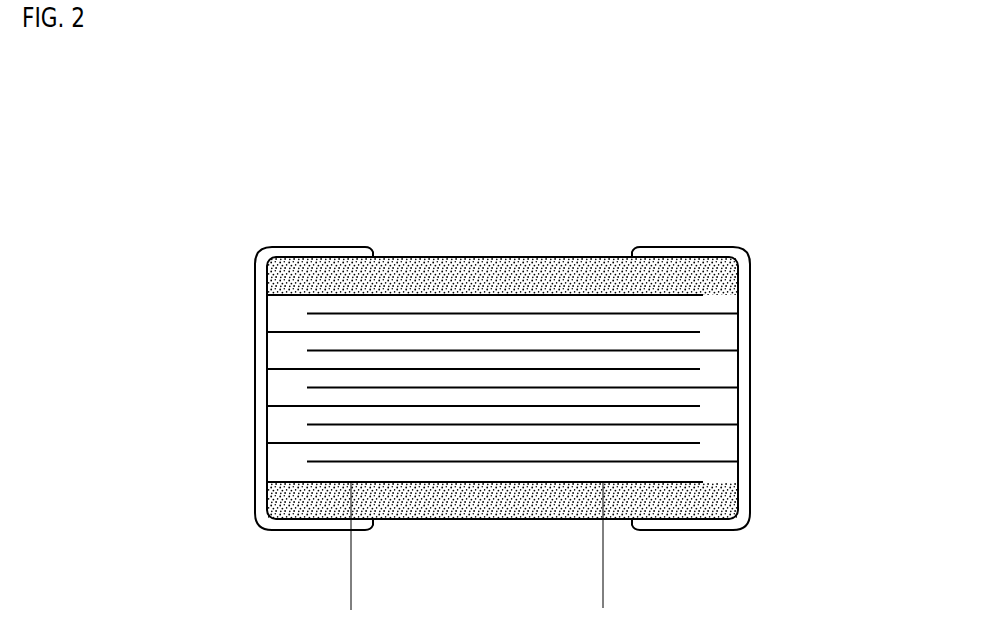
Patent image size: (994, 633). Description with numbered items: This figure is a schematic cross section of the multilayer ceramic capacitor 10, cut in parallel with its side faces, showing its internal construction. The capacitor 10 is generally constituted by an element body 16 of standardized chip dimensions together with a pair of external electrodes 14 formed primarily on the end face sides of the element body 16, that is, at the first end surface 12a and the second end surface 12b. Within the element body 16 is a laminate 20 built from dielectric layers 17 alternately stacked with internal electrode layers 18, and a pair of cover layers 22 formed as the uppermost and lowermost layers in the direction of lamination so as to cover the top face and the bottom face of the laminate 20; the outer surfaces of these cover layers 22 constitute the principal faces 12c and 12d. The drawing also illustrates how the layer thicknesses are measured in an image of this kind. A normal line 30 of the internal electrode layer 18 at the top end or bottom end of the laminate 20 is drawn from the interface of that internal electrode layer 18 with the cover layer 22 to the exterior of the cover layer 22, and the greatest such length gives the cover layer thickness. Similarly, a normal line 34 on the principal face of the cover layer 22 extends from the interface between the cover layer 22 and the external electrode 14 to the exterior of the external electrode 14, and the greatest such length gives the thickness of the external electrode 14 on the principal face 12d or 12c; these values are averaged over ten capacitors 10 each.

The multilayer ceramic capacitor 10 is at (667, 201).
The first end surface of ceramic body 12a is at (263, 393).
The second end surface of ceramic body 12b is at (752, 331).
The principal face 12c is at (410, 256).
The principal face 12d is at (427, 520).
The external electrode 14 is at (255, 265).
The element body 16 is at (577, 140).
The dielectric layer 17 is at (520, 348).
The internal electrode layer 18 is at (598, 330).
The laminate 20 is at (610, 191).
The cover layer 22 is at (432, 290).
The normal line 30 is at (605, 595).
The normal line 34 is at (348, 522).